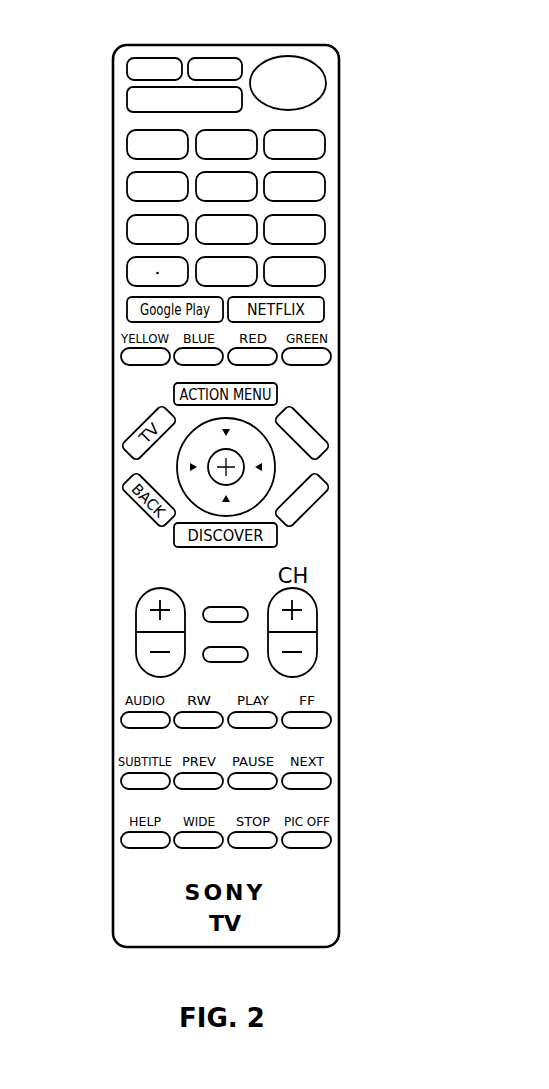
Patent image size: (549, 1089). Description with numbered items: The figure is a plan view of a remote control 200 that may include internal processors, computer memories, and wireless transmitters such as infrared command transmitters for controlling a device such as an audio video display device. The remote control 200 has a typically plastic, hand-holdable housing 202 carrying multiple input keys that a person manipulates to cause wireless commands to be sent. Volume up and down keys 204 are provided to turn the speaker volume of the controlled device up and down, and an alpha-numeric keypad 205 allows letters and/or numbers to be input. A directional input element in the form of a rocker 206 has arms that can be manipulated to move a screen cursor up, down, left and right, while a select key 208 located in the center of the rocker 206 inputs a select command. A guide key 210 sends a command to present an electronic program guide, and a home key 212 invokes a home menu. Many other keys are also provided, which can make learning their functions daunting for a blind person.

The remote control 200 is at (410, 100).
The housing 202 is at (113, 65).
The volume up and down keys 204 is at (137, 615).
The alpha-numeric keypad 205 is at (132, 163).
The rocker 206 is at (257, 467).
The select key 208 is at (207, 470).
The guide key 210 is at (307, 425).
The home key 212 is at (317, 503).